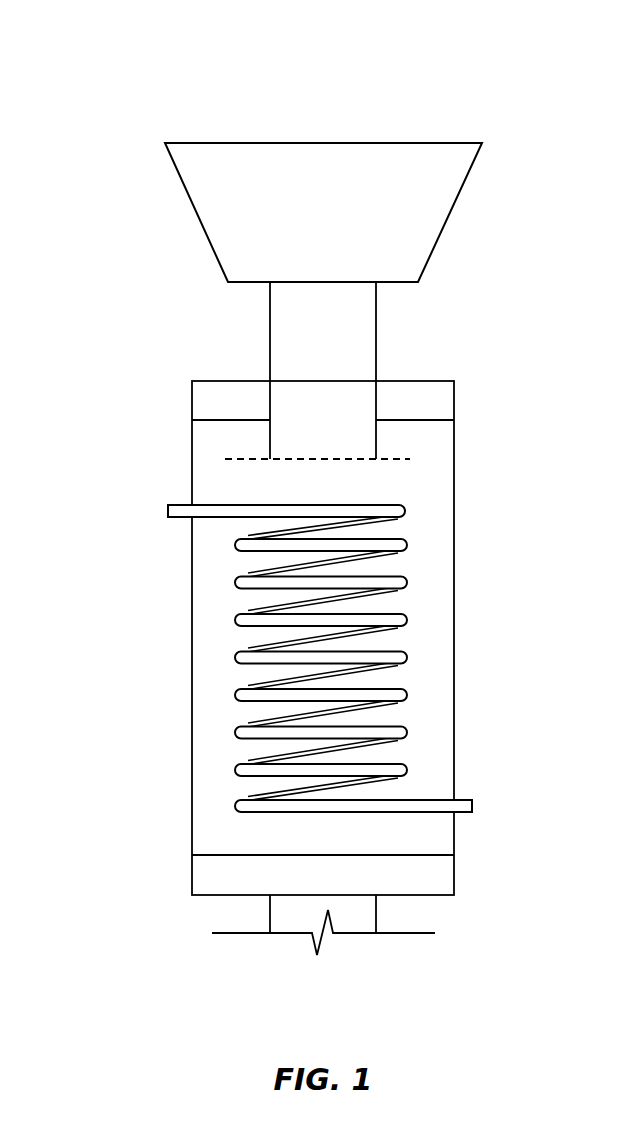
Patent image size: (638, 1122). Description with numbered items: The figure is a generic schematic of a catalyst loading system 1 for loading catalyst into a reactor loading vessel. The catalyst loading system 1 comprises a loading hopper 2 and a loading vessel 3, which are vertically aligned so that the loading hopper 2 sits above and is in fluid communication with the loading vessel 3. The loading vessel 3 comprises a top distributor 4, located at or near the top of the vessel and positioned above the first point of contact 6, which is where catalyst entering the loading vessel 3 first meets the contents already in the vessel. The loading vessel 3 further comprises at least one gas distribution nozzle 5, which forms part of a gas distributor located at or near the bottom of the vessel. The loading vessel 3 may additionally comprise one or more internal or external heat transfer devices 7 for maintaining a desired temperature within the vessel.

The catalyst loading system 1 is at (96, 62).
The loading hopper 2 is at (492, 135).
The loading vessel 3 is at (162, 381).
The top distributor 4 is at (405, 410).
The gas distribution nozzle 5 is at (323, 846).
The first point of contact 6 is at (323, 468).
The heat transfer device 7 is at (407, 621).